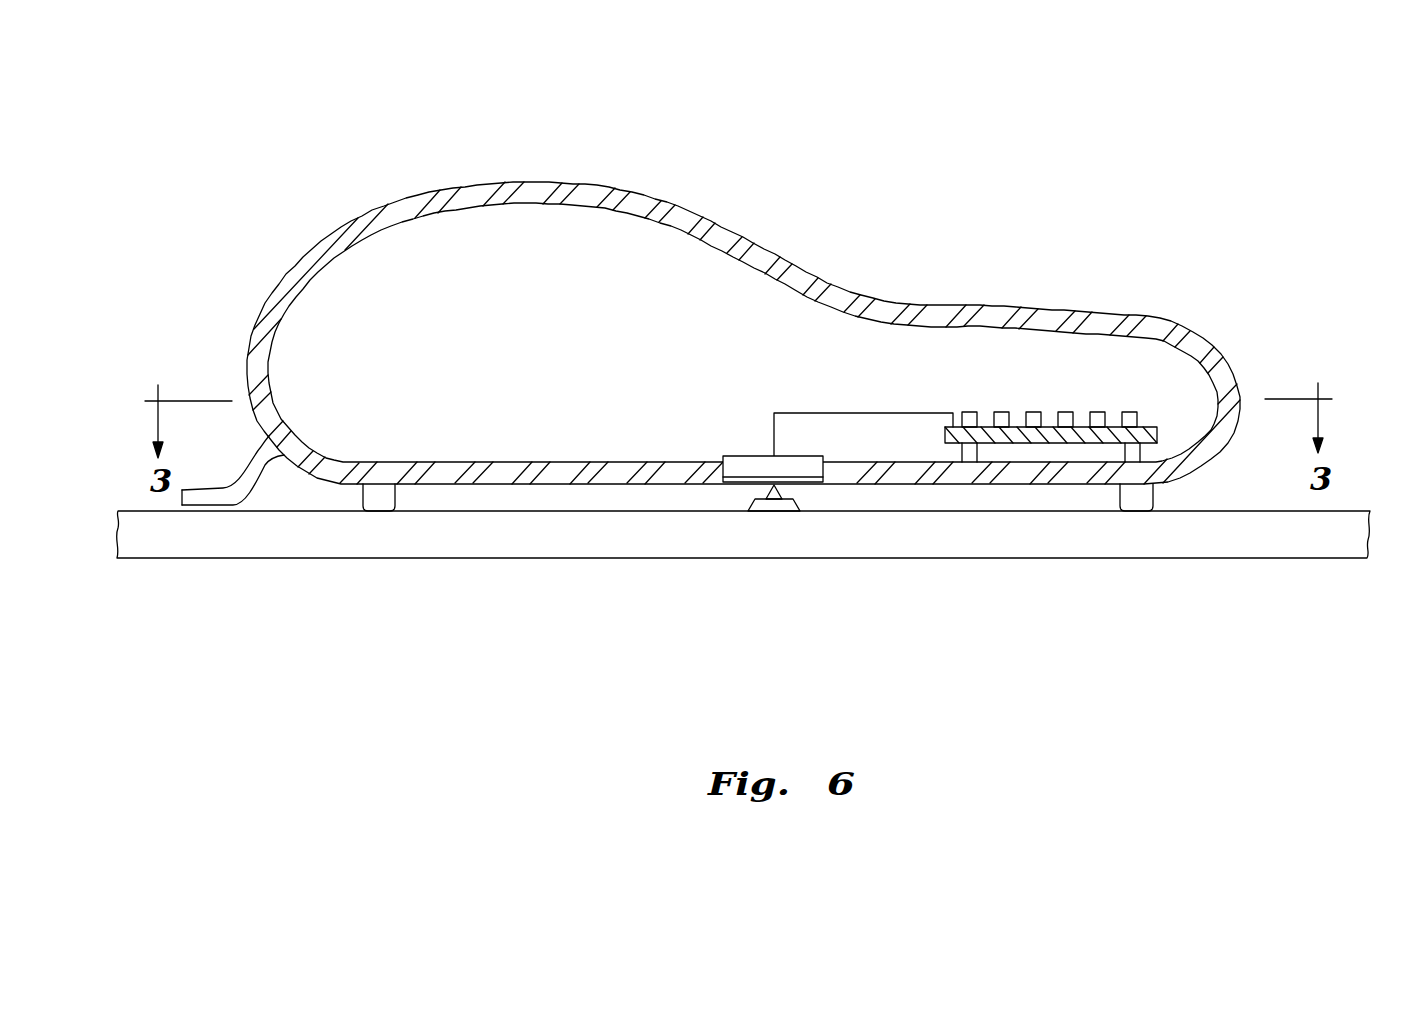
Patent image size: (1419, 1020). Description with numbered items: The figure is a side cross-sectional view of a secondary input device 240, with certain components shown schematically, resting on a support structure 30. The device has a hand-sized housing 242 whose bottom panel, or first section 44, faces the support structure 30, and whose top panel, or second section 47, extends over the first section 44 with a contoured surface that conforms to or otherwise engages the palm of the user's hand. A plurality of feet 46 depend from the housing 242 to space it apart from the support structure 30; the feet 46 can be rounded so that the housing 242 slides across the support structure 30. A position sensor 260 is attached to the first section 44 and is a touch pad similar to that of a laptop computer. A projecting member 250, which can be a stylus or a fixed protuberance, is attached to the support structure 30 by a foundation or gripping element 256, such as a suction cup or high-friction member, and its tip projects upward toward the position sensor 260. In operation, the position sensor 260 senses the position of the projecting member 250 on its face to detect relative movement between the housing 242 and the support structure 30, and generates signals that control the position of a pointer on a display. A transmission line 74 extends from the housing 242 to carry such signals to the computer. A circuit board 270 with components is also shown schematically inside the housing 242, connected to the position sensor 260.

The secondary input device 240 is at (168, 158).
The second section 47 is at (777, 257).
The first section 44 is at (568, 468).
The housing 242 is at (1233, 388).
The transmission line 74 is at (215, 497).
The feet 46 is at (378, 507).
The circuit board 270 is at (1122, 426).
The position sensor 260 is at (743, 453).
The projecting member 250 is at (770, 490).
The gripping element 256 is at (777, 507).
The support structure 30 is at (1350, 511).